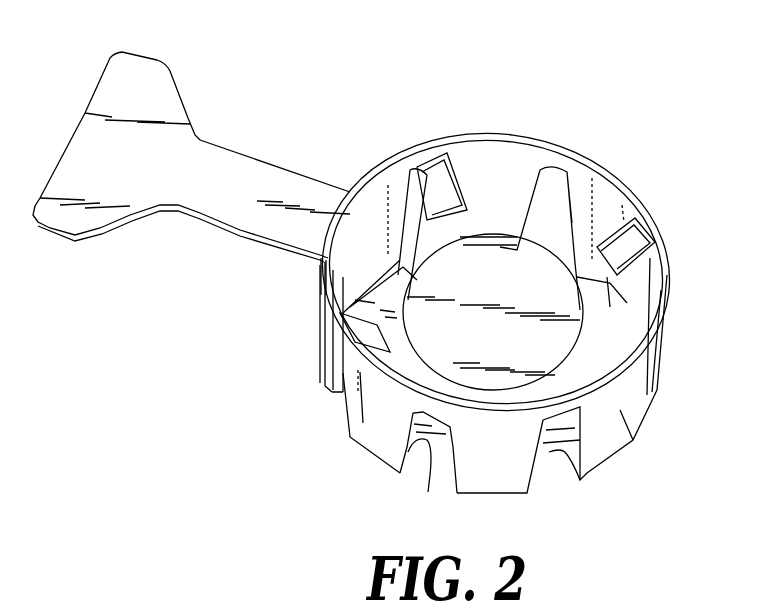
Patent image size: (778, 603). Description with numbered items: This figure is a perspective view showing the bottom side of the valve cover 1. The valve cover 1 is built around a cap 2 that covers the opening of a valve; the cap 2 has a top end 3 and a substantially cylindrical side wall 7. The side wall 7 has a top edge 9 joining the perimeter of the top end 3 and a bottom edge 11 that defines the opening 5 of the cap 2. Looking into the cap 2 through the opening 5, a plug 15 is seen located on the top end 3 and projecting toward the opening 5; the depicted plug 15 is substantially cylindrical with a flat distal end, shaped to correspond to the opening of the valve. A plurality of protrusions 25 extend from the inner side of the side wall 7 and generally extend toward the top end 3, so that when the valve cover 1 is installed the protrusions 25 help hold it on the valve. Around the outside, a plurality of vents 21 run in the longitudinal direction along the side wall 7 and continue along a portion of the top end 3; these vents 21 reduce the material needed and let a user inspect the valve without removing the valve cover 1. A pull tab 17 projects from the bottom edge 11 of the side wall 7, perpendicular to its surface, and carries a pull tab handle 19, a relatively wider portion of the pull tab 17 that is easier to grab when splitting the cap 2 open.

The valve cover 1 is at (284, 84).
The cap 2 is at (688, 281).
The top end 3 is at (427, 463).
The opening 5 is at (493, 166).
The side wall 7 is at (610, 434).
The top edge 9 is at (360, 453).
The bottom edge 11 is at (570, 150).
The plug 15 is at (527, 282).
The pull tab 17 is at (216, 242).
The pull tab handle 19 is at (100, 125).
The vents 21 is at (583, 481).
The protrusions 25 is at (427, 173).